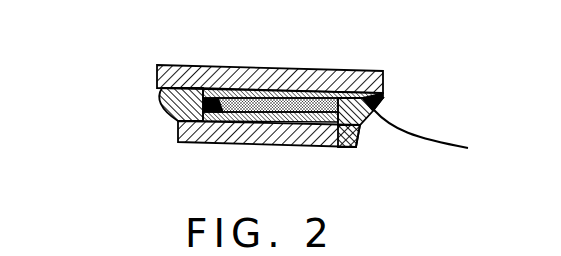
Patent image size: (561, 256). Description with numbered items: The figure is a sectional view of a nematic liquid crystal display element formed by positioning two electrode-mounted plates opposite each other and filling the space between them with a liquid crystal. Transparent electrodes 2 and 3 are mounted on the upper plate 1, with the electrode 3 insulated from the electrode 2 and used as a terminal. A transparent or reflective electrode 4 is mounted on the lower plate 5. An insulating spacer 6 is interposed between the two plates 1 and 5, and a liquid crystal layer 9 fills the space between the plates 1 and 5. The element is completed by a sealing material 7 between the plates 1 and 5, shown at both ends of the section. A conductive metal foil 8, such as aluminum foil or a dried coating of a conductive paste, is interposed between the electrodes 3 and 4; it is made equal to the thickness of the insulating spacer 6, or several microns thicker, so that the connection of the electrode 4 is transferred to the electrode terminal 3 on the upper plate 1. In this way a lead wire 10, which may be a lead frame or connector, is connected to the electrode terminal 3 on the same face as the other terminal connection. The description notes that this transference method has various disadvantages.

The plate 1 is at (176, 65).
The transparent electrode 2 is at (243, 95).
The electrode 3 is at (347, 107).
The transparent or reflective electrode 4 is at (277, 117).
The plate 5 is at (197, 133).
The insulating spacer 6 is at (203, 110).
The sealing material 7 is at (161, 103).
The conductive metal foil 8 is at (340, 126).
The liquid crystal layer 9 is at (323, 105).
The lead wire 10 is at (440, 147).